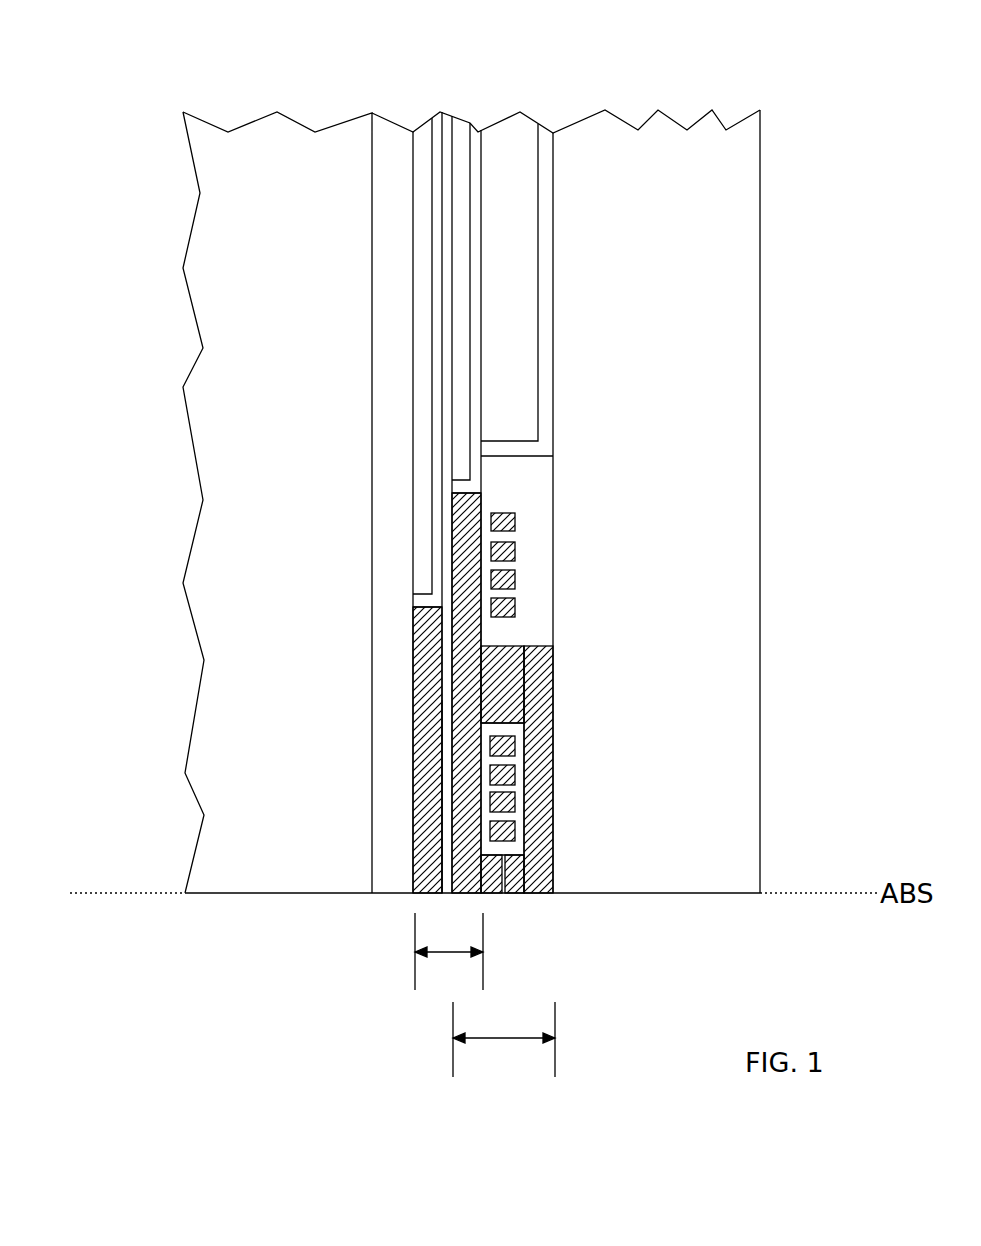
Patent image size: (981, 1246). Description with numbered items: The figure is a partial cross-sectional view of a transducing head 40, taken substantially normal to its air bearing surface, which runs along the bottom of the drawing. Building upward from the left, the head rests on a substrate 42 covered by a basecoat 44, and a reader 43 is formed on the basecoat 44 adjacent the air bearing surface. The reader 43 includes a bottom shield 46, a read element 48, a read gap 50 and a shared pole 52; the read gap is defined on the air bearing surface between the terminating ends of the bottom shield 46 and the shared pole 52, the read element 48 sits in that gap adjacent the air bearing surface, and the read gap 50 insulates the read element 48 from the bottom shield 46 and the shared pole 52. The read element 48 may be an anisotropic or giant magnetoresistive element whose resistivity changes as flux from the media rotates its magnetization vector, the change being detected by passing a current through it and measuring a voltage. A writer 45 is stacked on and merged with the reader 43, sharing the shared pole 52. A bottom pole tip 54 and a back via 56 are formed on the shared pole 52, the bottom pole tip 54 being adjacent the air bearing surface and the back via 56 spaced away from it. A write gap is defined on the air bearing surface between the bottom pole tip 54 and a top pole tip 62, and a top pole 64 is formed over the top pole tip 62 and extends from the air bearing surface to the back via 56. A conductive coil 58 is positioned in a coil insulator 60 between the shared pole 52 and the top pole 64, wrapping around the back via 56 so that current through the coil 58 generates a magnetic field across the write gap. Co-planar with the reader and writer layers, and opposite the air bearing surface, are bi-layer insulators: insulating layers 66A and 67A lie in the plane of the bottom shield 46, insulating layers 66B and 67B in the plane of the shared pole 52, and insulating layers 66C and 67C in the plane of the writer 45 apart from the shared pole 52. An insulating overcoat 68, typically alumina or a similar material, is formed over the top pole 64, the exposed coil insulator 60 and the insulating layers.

The transducing head 40 is at (778, 90).
The substrate 42 is at (262, 800).
The reader 43 is at (449, 958).
The basecoat 44 is at (395, 828).
The writer 45 is at (504, 1046).
The bottom shield 46 is at (397, 775).
The read element 48 is at (446, 893).
The read gap 50 is at (449, 738).
The shared pole 52 is at (463, 695).
The bottom pole tip 54 is at (493, 895).
The back via 56 is at (510, 666).
The conductive coil 58 is at (518, 738).
The coil insulator 60 is at (522, 802).
The top pole tip 62 is at (517, 893).
The top pole 64 is at (557, 836).
The insulating layer 66A is at (422, 179).
The insulating layer 66B is at (460, 245).
The insulating layer 66C is at (508, 322).
The insulating layer 67A is at (437, 208).
The insulating layer 67B is at (475, 283).
The insulating layer 67C is at (540, 330).
The overcoat 68 is at (705, 797).